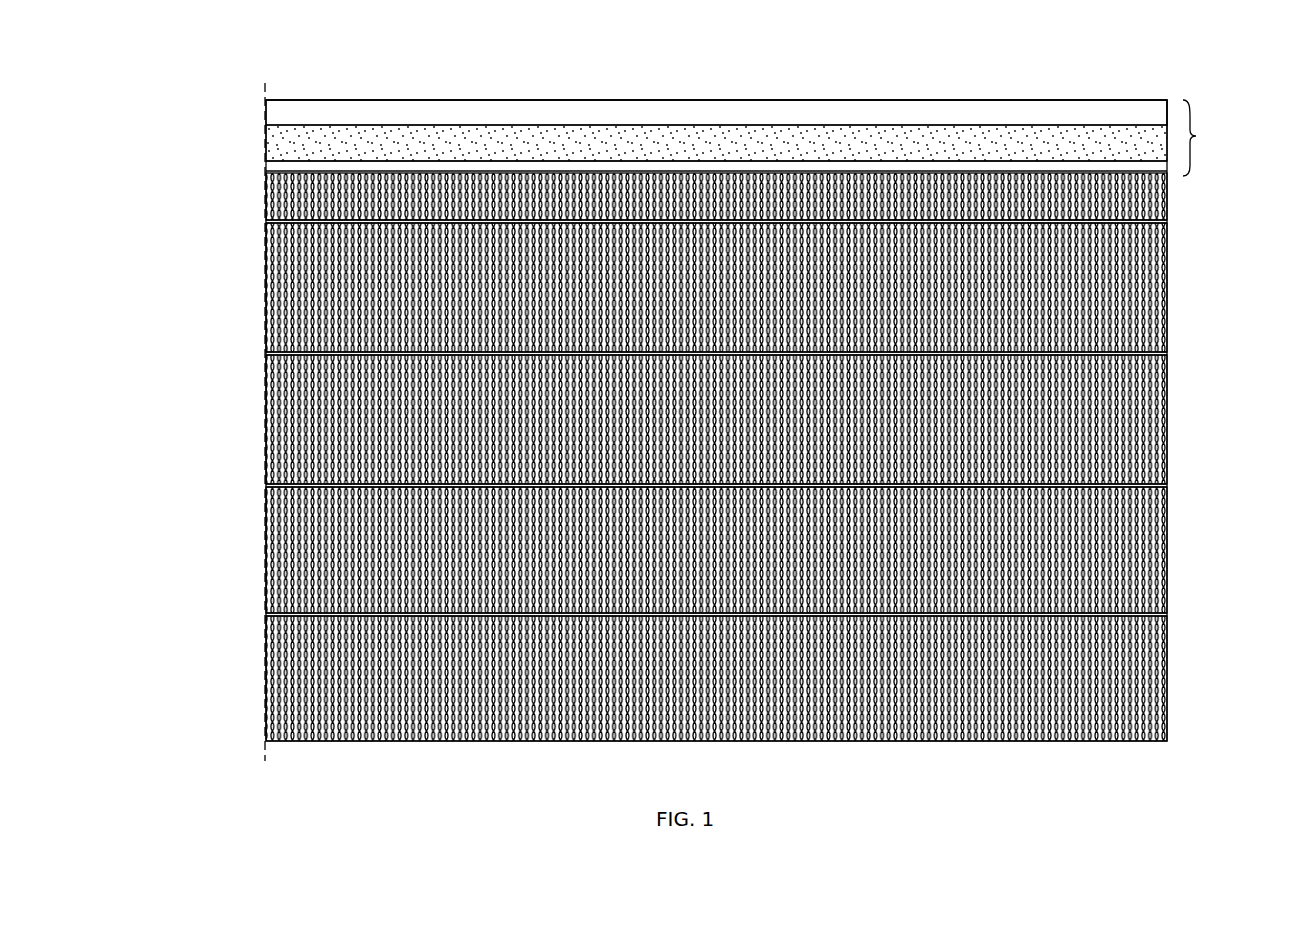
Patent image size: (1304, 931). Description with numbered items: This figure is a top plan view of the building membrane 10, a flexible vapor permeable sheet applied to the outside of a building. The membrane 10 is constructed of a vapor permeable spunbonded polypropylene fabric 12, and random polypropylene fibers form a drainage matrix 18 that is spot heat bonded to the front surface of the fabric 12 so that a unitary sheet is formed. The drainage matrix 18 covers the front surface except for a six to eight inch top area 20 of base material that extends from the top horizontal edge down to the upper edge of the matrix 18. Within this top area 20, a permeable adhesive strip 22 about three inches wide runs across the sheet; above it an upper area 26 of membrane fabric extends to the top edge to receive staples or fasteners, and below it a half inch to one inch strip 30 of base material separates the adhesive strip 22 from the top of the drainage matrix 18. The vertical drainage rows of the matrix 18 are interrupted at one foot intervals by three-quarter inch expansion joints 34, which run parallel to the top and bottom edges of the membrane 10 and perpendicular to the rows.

The building membrane 10 is at (1160, 320).
The spunbonded polypropylene fabric 12 is at (1160, 107).
The drainage matrix 18 is at (270, 425).
The top area 20 is at (1208, 138).
The permeable adhesive strip 22 is at (262, 138).
The upper area 26 is at (267, 103).
The strip of base material 30 is at (262, 161).
The expansion joint 34 is at (262, 345).